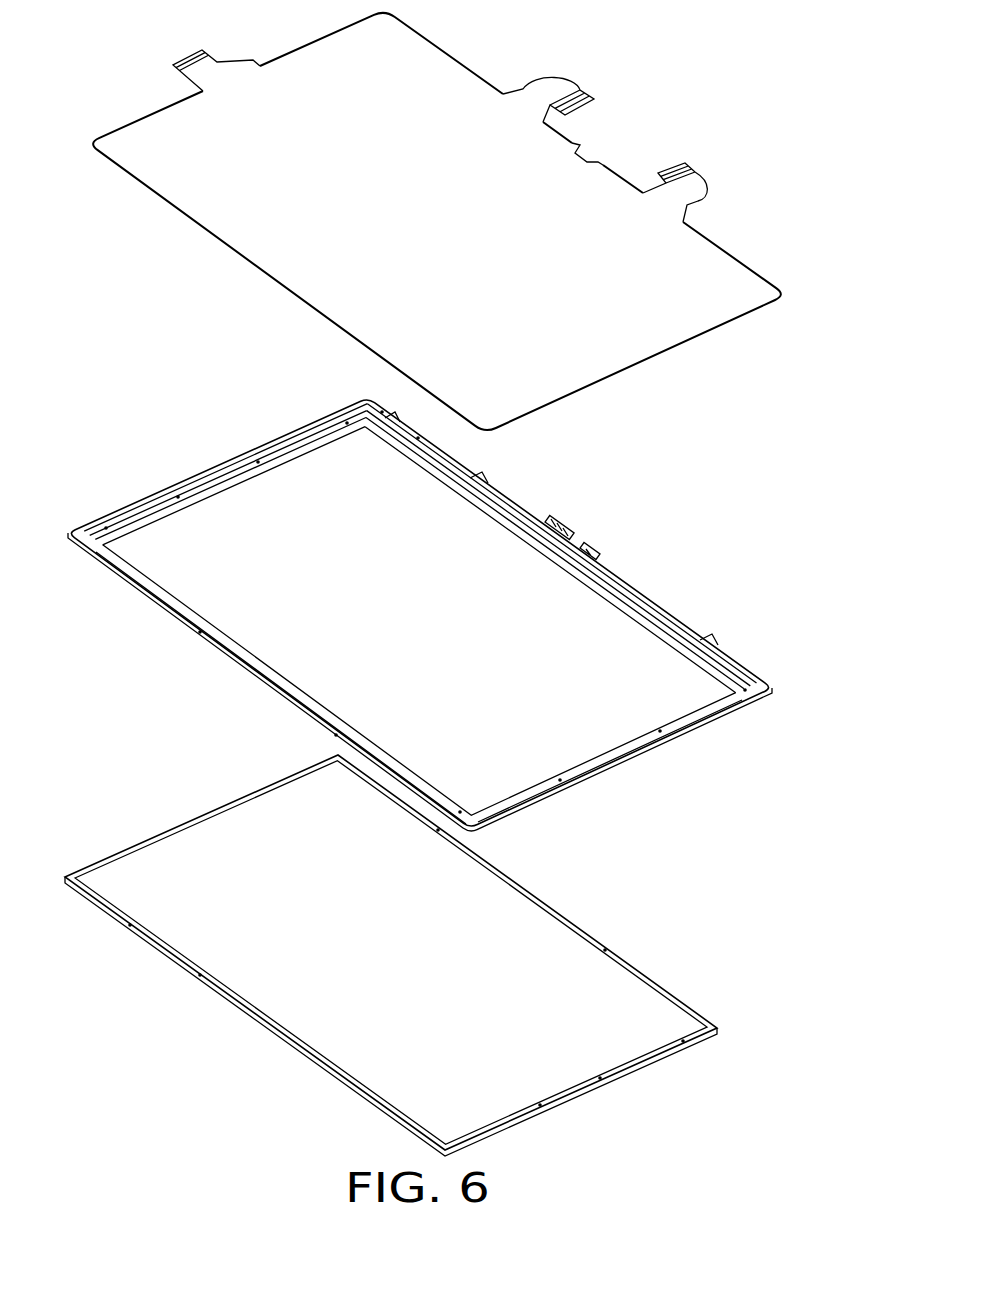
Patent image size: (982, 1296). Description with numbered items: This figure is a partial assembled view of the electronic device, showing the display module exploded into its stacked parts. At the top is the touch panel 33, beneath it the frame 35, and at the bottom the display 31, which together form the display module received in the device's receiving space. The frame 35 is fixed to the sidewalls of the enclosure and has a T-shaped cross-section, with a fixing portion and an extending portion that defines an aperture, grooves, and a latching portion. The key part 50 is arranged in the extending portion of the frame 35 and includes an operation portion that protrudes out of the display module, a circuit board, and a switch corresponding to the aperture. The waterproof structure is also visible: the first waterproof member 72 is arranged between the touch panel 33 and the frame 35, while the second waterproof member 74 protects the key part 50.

The display 31 is at (633, 1003).
The touch panel 33 is at (700, 277).
The frame 35 is at (703, 727).
The key part 50 is at (560, 533).
The first waterproof member 72 is at (673, 625).
The second waterproof member 74 is at (593, 557).